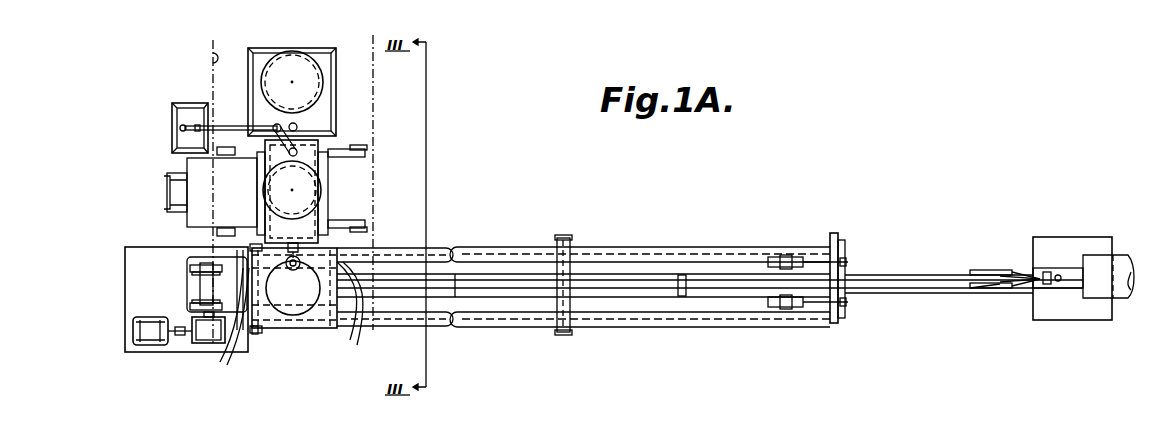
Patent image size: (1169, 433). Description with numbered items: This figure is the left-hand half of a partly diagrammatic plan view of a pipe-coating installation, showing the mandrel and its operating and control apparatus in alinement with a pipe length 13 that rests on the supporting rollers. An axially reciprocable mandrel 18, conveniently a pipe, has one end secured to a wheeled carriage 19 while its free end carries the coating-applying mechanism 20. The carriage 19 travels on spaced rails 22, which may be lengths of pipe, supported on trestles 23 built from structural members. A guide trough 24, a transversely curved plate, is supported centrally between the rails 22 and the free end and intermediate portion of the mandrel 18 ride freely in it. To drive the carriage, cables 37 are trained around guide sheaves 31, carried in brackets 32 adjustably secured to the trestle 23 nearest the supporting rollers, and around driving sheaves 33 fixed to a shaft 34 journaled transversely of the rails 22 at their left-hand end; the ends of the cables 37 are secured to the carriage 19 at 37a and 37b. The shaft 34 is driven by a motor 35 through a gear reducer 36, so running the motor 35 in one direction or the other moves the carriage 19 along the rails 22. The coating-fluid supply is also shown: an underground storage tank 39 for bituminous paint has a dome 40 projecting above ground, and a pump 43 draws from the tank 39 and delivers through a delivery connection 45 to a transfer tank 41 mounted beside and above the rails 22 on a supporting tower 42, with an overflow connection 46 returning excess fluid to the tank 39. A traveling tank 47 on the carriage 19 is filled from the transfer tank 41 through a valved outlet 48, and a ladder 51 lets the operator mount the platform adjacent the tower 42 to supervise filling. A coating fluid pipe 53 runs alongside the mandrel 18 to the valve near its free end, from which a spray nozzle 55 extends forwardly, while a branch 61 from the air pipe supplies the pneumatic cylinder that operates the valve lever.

The pipe length 13 is at (1121, 262).
The mandrel 18 is at (886, 275).
The wheeled carriage 19 is at (328, 318).
The coating-applying mechanism 20 is at (1000, 270).
The rails 22 is at (641, 246).
The trestles 23 is at (255, 334).
The guide trough 24 is at (607, 290).
The guide sheaves 31 is at (770, 260).
The brackets 32 is at (800, 256).
The driving sheaves 33 is at (192, 268).
The shaft 34 is at (205, 285).
The motor 35 is at (152, 338).
The gear reducer 36 is at (205, 335).
The cables 37 is at (483, 263).
The cable end connection 37a is at (222, 329).
The cable end connection 37b is at (362, 311).
The underground storage tank 39 is at (210, 58).
The dome 40 is at (328, 76).
The transfer tank 41 is at (272, 162).
The supporting tower 42 is at (338, 220).
The pump 43 is at (183, 117).
The delivery connection 45 is at (224, 120).
The overflow connection 46 is at (298, 124).
The traveling tank 47 is at (294, 308).
The valved outlet 48 is at (277, 243).
The ladder 51 is at (167, 192).
The coating fluid pipe 53 is at (995, 289).
The spray nozzle 55 is at (1058, 274).
The branch 61 is at (982, 270).